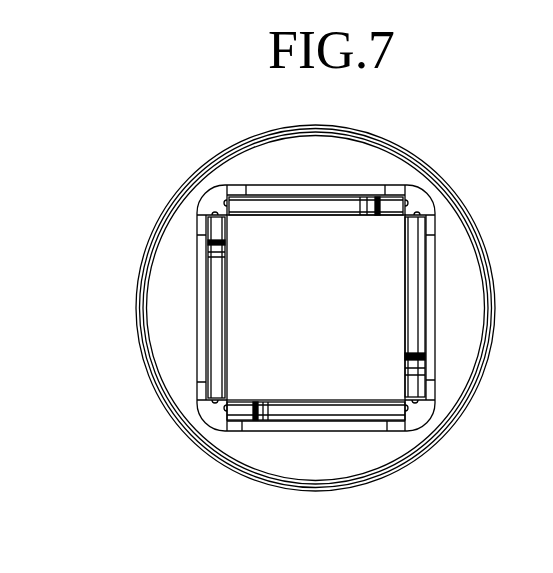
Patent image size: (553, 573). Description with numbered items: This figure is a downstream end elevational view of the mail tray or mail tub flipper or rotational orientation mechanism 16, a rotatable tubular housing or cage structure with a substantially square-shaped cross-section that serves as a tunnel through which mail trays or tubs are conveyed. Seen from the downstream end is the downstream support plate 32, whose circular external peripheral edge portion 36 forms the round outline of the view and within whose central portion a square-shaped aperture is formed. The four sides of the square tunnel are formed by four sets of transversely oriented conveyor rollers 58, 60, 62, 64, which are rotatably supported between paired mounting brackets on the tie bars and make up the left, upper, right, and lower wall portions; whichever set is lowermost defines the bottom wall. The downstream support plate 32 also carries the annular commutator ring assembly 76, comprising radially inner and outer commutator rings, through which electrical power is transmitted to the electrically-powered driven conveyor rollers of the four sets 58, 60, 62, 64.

The mail tray or mail tub flipper or rotational orientation mechanism 16 is at (198, 157).
The annular commutator ring assembly 76 is at (450, 184).
The circular external peripheral edge portion 36 is at (165, 410).
The downstream support plate 32 is at (245, 442).
The conveyor rollers 58 is at (218, 313).
The conveyor rollers 60 is at (273, 203).
The conveyor rollers 62 is at (413, 303).
The conveyor rollers 64 is at (320, 407).